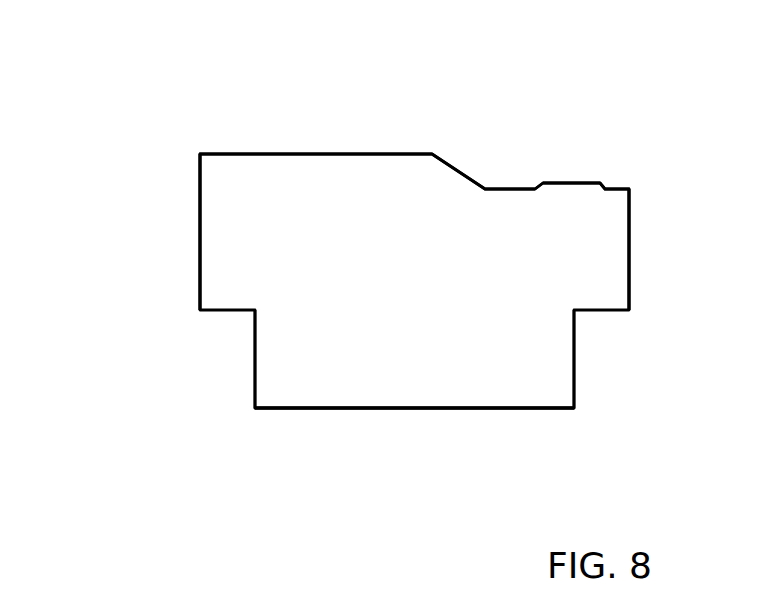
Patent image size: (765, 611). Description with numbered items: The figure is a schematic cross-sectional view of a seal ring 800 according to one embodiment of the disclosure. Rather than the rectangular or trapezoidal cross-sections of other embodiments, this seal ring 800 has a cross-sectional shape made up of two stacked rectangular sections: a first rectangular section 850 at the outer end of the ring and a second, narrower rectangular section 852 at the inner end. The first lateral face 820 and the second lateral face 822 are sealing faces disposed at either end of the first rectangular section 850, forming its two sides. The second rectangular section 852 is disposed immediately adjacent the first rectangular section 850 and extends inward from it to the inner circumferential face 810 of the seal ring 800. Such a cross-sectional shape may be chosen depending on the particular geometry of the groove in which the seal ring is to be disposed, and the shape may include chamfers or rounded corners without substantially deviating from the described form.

The seal ring 800 is at (100, 64).
The inner circumferential face 810 is at (417, 408).
The first lateral face 820 is at (629, 252).
The second lateral face 822 is at (200, 242).
The first rectangular section 850 is at (438, 252).
The second rectangular section 852 is at (439, 378).